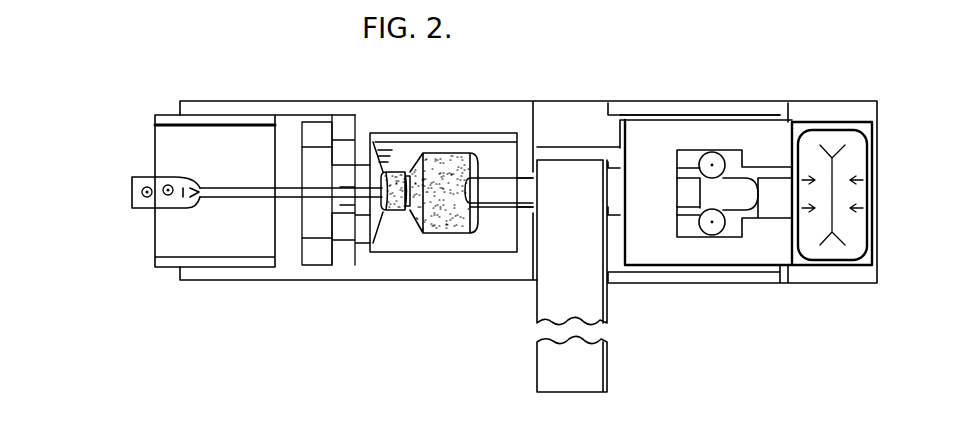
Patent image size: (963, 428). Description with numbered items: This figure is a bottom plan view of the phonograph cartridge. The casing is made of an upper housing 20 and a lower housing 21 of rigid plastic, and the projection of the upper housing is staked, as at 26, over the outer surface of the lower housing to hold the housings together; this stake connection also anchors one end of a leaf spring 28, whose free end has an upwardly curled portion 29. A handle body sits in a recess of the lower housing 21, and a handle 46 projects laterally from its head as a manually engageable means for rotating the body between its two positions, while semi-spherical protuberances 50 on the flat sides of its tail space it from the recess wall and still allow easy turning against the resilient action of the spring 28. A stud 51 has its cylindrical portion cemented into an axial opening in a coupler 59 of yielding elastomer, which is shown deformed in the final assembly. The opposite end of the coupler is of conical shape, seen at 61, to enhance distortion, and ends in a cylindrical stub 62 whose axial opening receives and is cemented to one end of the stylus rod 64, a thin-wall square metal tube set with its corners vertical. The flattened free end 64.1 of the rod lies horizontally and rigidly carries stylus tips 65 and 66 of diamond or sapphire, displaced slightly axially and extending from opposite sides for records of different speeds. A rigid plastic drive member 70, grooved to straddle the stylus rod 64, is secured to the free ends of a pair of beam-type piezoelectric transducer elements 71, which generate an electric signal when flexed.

The upper housing 20 is at (183, 122).
The lower housing 21 is at (241, 100).
The stake 26 is at (825, 145).
The leaf spring 28 is at (761, 253).
The upwardly curled portion 29 is at (640, 135).
The handle 46 is at (590, 368).
The semi-spherical protuberances 50 is at (714, 157).
The stud 51 is at (500, 223).
The coupler 59 is at (455, 150).
The conical portion 61 is at (415, 162).
The cylindrical stub 62 is at (390, 172).
The stylus rod 64 is at (229, 188).
The flattened free end 64.1 is at (133, 186).
The stylus tip 65 is at (164, 186).
The stylus tip 66 is at (146, 198).
The drive member 70 is at (317, 266).
The transducer elements 71 is at (343, 133).